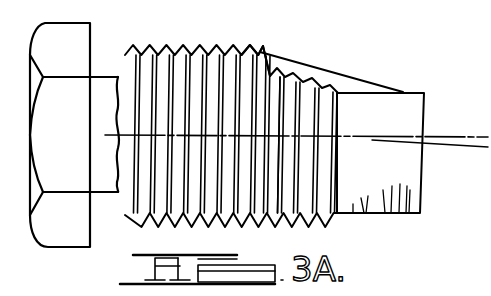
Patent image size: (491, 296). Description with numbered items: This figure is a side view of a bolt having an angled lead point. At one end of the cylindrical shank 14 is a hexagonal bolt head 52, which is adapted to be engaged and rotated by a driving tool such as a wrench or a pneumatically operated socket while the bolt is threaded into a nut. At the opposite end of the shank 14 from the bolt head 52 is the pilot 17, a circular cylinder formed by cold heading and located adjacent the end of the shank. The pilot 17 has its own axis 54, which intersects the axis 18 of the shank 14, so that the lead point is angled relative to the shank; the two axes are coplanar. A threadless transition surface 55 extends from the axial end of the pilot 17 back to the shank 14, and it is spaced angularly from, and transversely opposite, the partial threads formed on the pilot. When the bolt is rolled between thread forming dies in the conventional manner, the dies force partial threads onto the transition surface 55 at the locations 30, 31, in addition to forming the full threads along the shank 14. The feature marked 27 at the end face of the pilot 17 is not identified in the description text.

The hexagonal bolt head 52 is at (58, 238).
The shank 14 is at (210, 38).
The partial thread on transition surface 30 is at (241, 52).
The partial thread on transition surface 31 is at (260, 55).
The shank axis 18 is at (273, 122).
The threadless transition surface 55 is at (360, 80).
The pilot 17 is at (402, 93).
The tip end face 27 is at (413, 214).
The pilot axis 54 is at (440, 148).